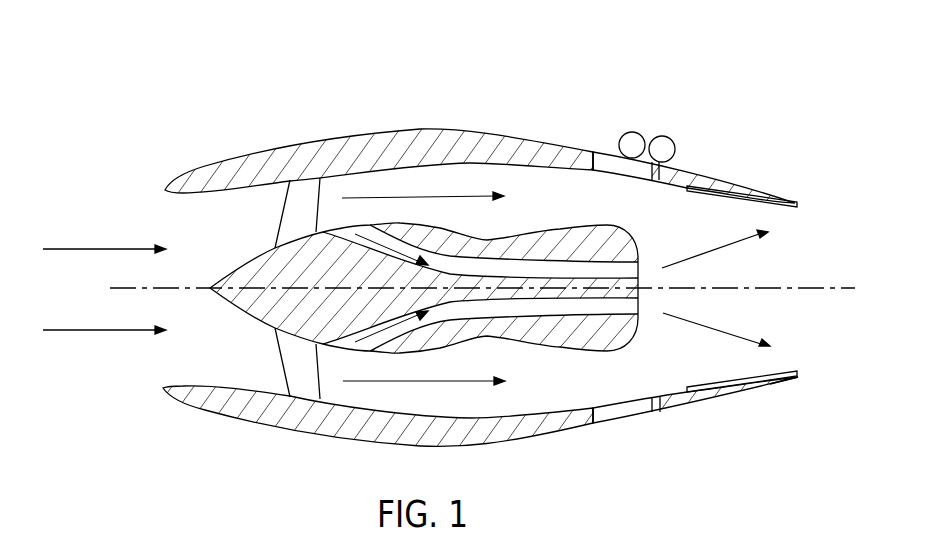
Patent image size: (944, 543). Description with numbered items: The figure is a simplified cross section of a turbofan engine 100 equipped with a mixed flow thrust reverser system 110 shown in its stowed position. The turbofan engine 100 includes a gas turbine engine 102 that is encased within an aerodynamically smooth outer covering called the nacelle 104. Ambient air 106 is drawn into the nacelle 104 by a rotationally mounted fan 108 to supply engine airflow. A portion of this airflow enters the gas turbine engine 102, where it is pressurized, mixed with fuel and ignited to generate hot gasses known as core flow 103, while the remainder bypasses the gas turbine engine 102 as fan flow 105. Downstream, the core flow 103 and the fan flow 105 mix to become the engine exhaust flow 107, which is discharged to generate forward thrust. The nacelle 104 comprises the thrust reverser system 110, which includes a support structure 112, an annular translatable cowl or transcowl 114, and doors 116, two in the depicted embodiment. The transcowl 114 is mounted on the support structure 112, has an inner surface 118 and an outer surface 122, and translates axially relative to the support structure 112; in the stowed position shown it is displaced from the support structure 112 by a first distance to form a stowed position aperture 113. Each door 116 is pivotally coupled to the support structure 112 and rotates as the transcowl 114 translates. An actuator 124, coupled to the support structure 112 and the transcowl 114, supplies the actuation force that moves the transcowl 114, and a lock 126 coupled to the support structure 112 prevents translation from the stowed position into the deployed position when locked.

The turbofan engine 100 is at (483, 84).
The gas turbine engine 102 is at (536, 232).
The core flow 103 is at (403, 257).
The nacelle 104 is at (213, 163).
The fan flow 105 is at (436, 197).
The ambient air 106 is at (112, 249).
The engine exhaust flow 107 is at (718, 250).
The fan 108 is at (307, 184).
The mixed flow thrust reverser system 110 is at (703, 229).
The support structure 112 is at (593, 152).
The stowed position aperture 113 is at (667, 402).
The transcowl 114 is at (752, 186).
The door 116 is at (748, 203).
The inner surface 118 is at (662, 398).
The outer surface 122 is at (778, 380).
The actuator 124 is at (626, 133).
The lock 126 is at (676, 149).